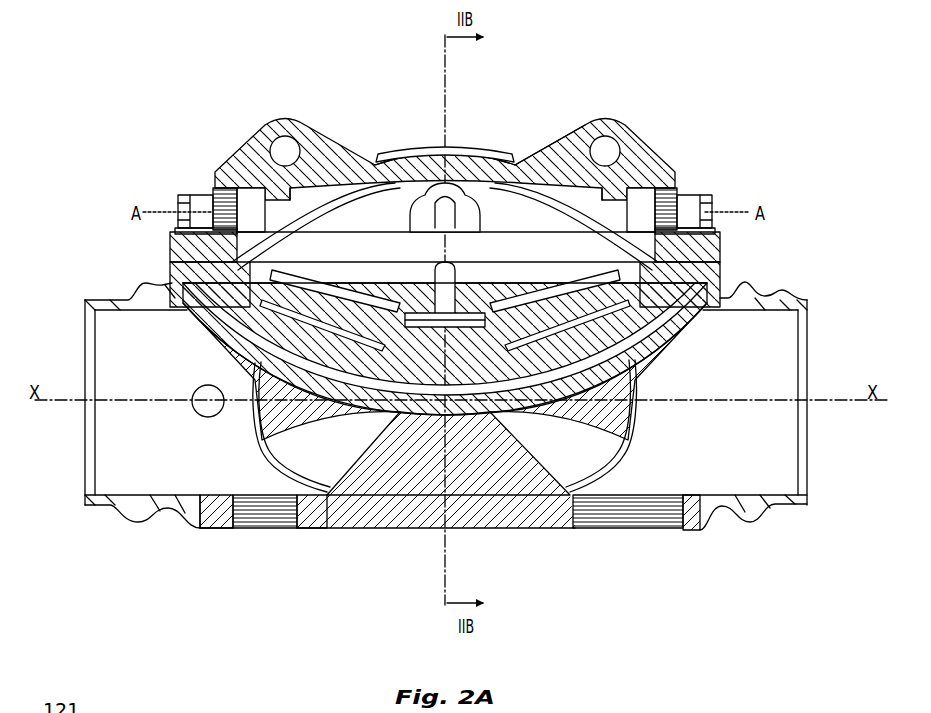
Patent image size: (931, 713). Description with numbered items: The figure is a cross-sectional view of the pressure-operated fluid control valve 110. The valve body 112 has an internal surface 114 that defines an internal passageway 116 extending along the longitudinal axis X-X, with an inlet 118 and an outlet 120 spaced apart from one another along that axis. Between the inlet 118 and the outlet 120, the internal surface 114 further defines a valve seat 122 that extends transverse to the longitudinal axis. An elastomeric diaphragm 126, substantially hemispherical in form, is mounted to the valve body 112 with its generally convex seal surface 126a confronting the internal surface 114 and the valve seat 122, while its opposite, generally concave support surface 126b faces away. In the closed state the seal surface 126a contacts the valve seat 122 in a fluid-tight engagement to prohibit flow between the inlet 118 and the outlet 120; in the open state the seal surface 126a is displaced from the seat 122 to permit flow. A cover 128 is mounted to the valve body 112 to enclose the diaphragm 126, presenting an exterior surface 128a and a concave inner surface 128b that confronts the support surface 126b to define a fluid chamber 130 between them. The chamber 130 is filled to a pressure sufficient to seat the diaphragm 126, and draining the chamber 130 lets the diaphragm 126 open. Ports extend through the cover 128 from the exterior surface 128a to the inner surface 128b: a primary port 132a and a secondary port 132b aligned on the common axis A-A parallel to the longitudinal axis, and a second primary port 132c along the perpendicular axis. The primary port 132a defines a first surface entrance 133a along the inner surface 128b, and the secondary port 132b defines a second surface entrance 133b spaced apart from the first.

The pressure-operated fluid control valve 110 is at (198, 78).
The valve body 112 is at (427, 483).
The internal surface 114 is at (153, 492).
The internal passageway 116 is at (230, 374).
The inlet 118 is at (107, 338).
The outlet 120 is at (783, 350).
The valve seat 122 is at (449, 372).
The elastomeric diaphragm 126 is at (245, 283).
The seal surface 126a is at (400, 335).
The support surface 126b is at (397, 300).
The cover 128 is at (547, 150).
The exterior surface 128a is at (522, 148).
The inner surface 128b is at (573, 138).
The fluid chamber 130 is at (556, 251).
The primary port 132a is at (212, 202).
The secondary port 132b is at (676, 198).
The second primary port 132c is at (440, 195).
The first surface entrance 133a is at (276, 214).
The second surface entrance 133b is at (614, 214).